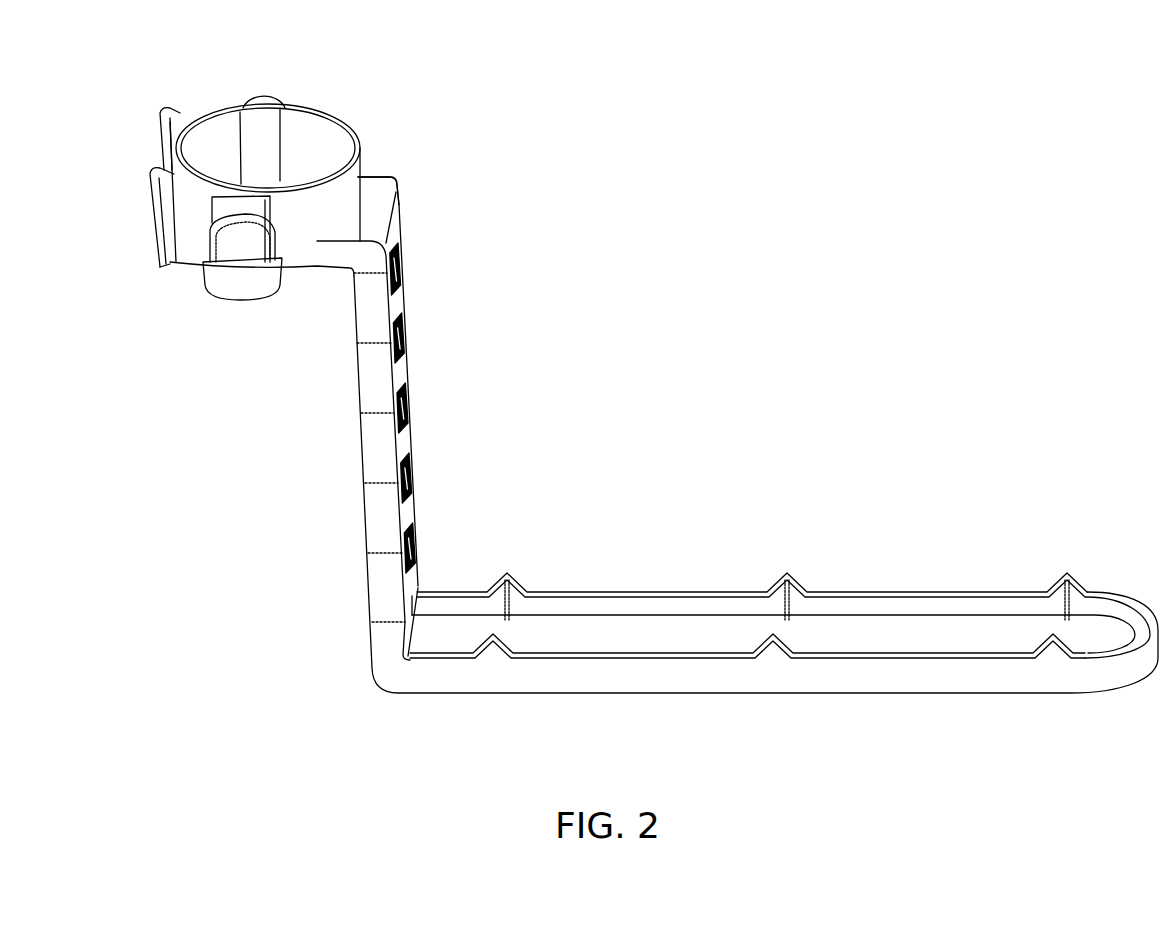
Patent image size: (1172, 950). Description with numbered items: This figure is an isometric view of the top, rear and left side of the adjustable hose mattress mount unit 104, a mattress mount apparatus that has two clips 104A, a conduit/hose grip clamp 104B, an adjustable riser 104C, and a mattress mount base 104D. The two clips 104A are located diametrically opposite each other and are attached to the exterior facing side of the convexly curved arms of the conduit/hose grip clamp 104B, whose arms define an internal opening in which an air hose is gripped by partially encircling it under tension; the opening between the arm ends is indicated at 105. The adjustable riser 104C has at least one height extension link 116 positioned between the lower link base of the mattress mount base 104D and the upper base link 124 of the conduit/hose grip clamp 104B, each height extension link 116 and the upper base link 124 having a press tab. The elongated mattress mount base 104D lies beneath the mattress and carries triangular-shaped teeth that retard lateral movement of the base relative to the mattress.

The adjustable hose mattress mount unit 104 is at (726, 371).
The clips 104A is at (262, 100).
The conduit/hose grip clamp 104B is at (312, 142).
The adjustable riser 104C is at (437, 592).
The mattress mount base 104D is at (1156, 712).
The clamp opening lips 105 is at (160, 135).
The height extension link 116 is at (370, 433).
The upper base link 124 is at (378, 187).